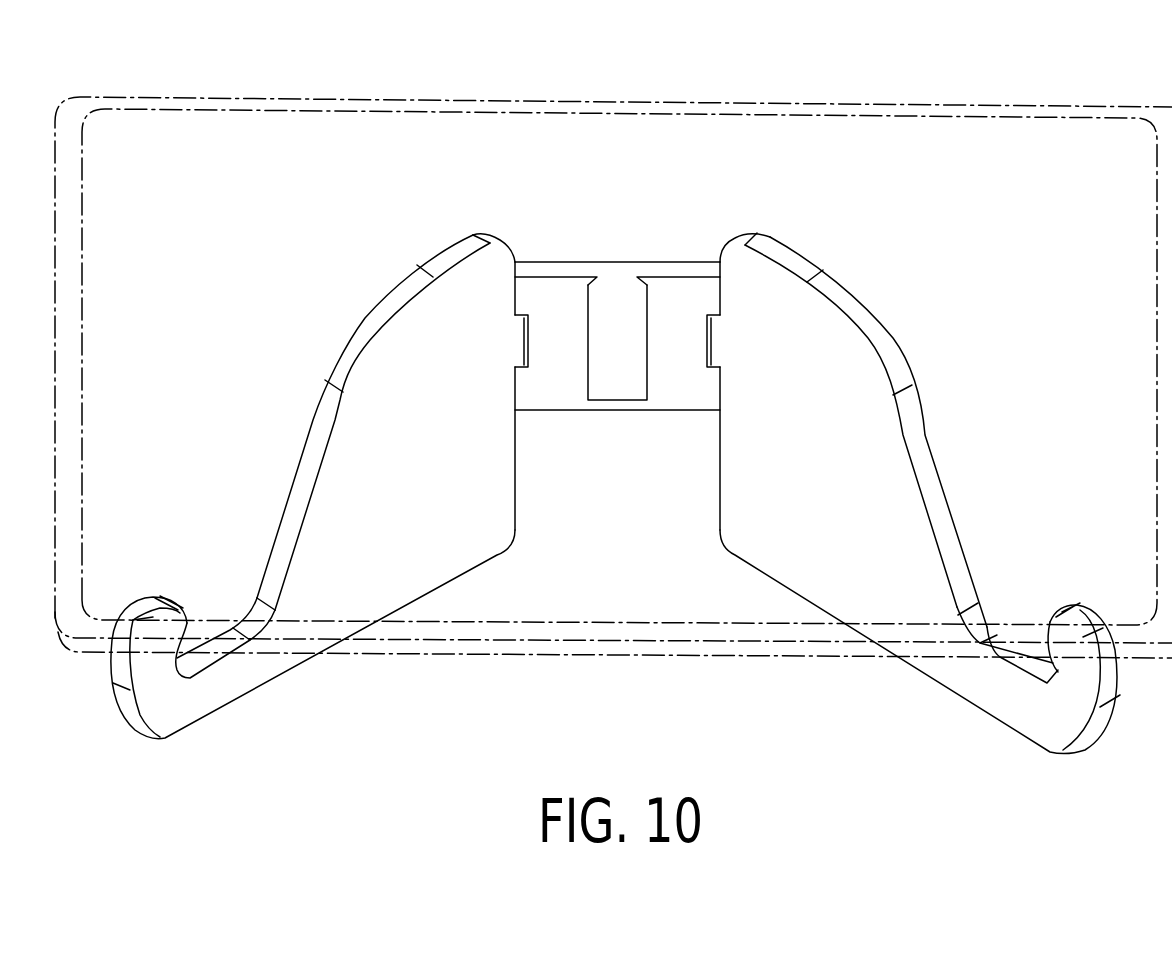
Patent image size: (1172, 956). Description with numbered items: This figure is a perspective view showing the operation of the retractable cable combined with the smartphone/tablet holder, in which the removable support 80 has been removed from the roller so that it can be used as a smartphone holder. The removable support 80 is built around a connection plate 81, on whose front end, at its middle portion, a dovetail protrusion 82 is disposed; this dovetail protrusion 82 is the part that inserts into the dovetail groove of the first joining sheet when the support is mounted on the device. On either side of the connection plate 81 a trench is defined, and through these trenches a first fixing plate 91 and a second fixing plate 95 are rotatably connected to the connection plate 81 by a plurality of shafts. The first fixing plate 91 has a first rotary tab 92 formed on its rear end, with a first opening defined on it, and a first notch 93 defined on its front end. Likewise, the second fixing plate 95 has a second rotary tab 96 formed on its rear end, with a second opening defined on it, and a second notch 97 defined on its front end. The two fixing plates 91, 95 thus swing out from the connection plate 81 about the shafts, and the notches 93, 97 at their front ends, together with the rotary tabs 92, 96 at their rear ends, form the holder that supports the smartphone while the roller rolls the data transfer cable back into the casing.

The removable support 80 is at (796, 213).
The connection plate 81 is at (597, 262).
The dovetail protrusion 82 is at (625, 297).
The first fixing plate 91 is at (370, 307).
The first rotary tab 92 is at (523, 334).
The first notch 93 is at (222, 645).
The second fixing plate 95 is at (890, 345).
The second rotary tab 96 is at (712, 340).
The second notch 97 is at (1022, 655).